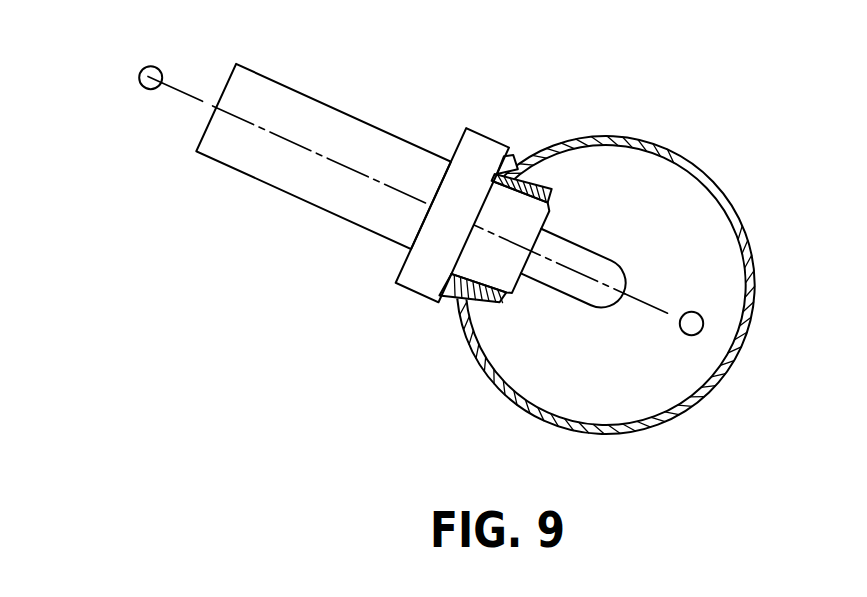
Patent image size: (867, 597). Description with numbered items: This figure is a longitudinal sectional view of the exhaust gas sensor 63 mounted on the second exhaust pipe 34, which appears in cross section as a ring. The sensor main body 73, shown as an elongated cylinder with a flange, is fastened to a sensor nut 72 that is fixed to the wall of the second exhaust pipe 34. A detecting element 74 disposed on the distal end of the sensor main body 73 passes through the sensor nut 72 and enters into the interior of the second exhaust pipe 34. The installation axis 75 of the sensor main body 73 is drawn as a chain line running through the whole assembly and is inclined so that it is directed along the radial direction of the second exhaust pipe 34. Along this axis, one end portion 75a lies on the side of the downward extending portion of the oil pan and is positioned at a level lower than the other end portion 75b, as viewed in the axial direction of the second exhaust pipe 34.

The second exhaust pipe 34 is at (610, 136).
The exhaust gas sensor 63 is at (441, 81).
The sensor nut 72 is at (508, 154).
The sensor main body 73 is at (355, 116).
The detecting element 74 is at (610, 258).
The installation axis 75 is at (290, 140).
The one end portion 75a is at (692, 336).
The other end portion 75b is at (150, 90).